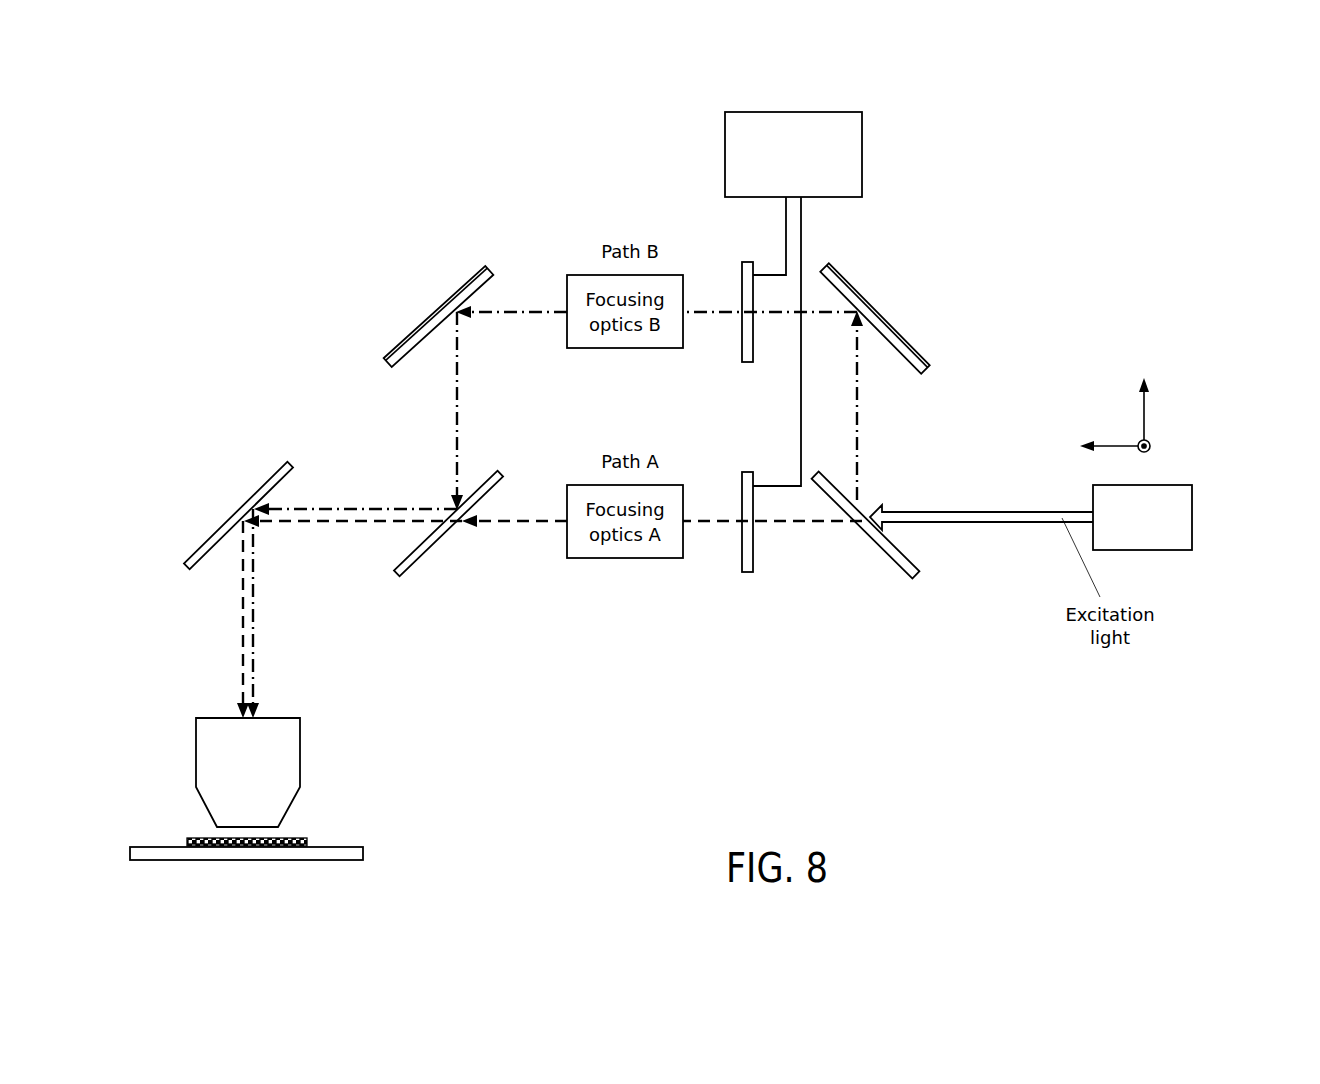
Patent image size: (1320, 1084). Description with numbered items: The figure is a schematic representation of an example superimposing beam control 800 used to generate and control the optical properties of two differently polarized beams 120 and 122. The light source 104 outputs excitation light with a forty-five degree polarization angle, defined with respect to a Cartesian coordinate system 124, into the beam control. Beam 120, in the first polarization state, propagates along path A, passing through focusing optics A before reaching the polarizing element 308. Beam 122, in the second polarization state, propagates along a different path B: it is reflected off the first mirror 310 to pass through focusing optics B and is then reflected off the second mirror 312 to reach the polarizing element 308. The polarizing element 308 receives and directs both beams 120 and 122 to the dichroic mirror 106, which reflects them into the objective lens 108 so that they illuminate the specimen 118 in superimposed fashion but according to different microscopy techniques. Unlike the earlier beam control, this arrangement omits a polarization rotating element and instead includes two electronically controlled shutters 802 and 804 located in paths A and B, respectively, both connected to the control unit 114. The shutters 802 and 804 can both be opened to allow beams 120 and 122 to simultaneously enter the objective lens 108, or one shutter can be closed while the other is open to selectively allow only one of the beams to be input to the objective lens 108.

The superimposing beam control 800 is at (1170, 236).
The control unit 114 is at (862, 152).
The shutter 804 is at (742, 343).
The shutter 802 is at (740, 547).
The first mirror 310 is at (923, 350).
The second mirror 312 is at (415, 342).
The dichroic mirror 106 is at (260, 488).
The second polarizing element 308 is at (427, 555).
The beam 120 is at (812, 523).
The light source 104 is at (1173, 550).
The Cartesian coordinate system 124 is at (1180, 392).
The beam 122 is at (858, 455).
The objective lens 108 is at (229, 788).
The specimen 118 is at (322, 832).